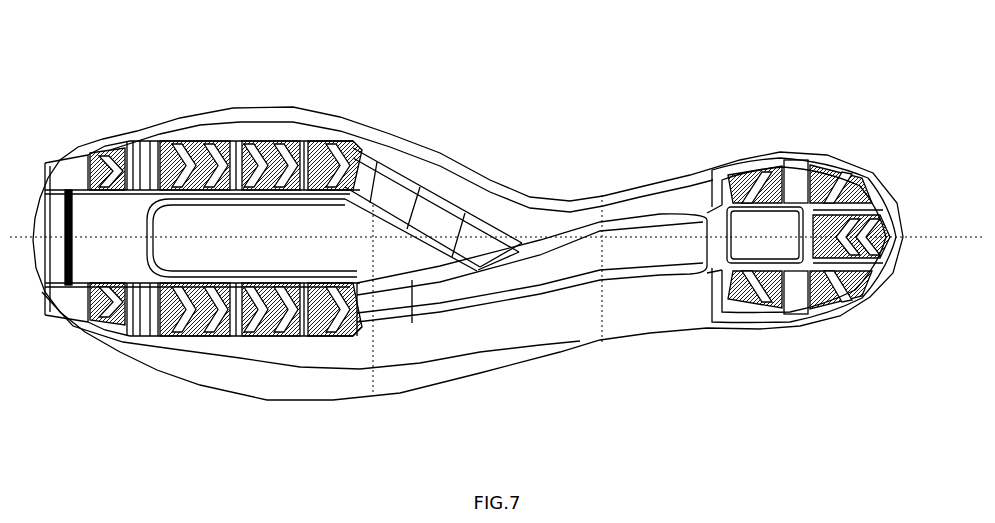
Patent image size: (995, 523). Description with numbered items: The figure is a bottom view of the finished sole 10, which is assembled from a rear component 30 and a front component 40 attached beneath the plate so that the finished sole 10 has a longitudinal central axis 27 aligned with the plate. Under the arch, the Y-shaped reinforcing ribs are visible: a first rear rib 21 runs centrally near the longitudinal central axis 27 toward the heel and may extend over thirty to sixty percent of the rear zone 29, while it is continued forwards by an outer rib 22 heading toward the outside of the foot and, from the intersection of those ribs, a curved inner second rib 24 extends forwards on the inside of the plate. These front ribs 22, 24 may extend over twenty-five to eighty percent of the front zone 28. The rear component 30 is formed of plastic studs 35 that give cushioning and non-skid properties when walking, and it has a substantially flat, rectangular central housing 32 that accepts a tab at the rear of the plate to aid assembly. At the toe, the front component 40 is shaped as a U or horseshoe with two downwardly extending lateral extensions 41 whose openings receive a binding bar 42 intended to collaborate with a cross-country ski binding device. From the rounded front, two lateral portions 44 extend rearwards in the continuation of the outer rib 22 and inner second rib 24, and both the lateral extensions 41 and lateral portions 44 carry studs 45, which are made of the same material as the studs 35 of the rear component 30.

The sole 10 is at (528, 195).
The first rear rib 21 is at (648, 250).
The outer rib 22 is at (385, 305).
The inner second rib 24 is at (402, 195).
The longitudinal central axis 27 is at (913, 233).
The front zone 28 is at (348, 150).
The rear zone 29 is at (687, 203).
The rear component 30 is at (820, 330).
The central housing 32 is at (777, 228).
The studs 35 is at (850, 176).
The front component 40 is at (45, 172).
The lateral extensions 41 is at (73, 200).
The binding bar 42 is at (112, 305).
The lateral portions 44 is at (170, 160).
The studs 45 is at (318, 150).